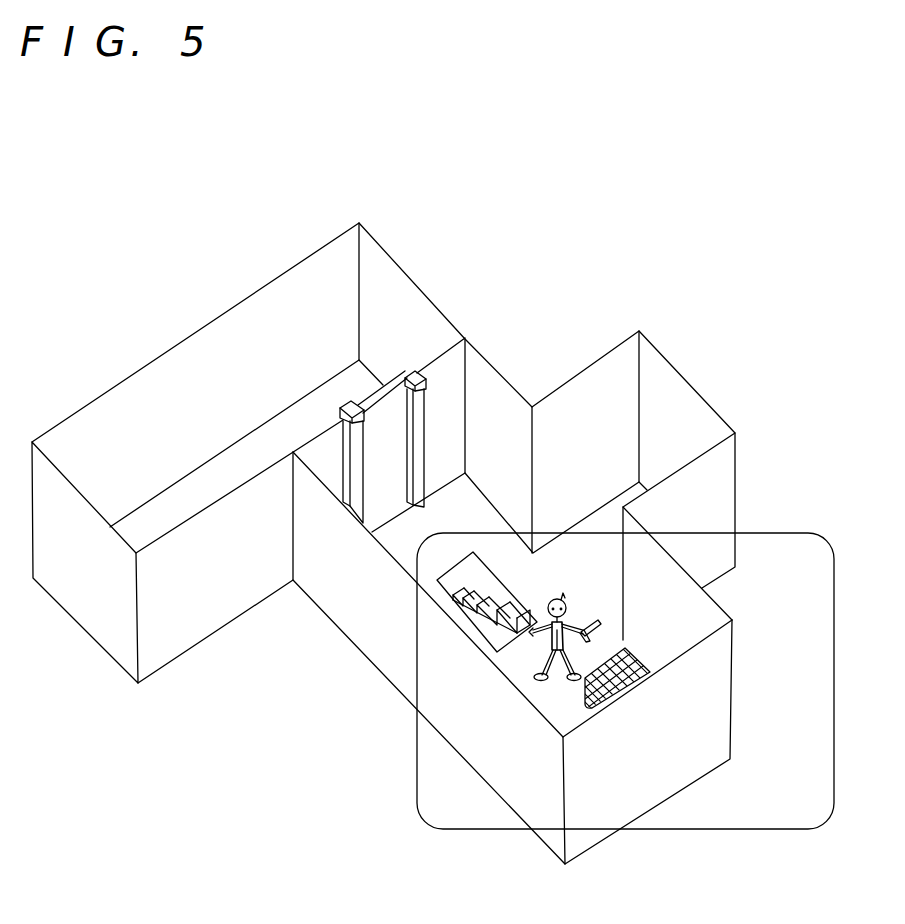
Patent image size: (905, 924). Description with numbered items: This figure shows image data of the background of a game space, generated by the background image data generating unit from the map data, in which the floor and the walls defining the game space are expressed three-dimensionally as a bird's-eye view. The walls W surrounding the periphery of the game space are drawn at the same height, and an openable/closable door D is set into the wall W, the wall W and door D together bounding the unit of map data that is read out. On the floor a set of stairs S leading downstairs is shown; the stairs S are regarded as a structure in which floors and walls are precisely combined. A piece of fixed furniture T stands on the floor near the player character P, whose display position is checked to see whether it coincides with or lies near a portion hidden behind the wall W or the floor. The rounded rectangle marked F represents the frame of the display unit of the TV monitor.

The wall W is at (720, 482).
The door D is at (393, 378).
The stairs S is at (467, 588).
The player character P is at (547, 654).
The piece of fixed furniture T is at (646, 652).
The frame of the display unit F is at (834, 717).